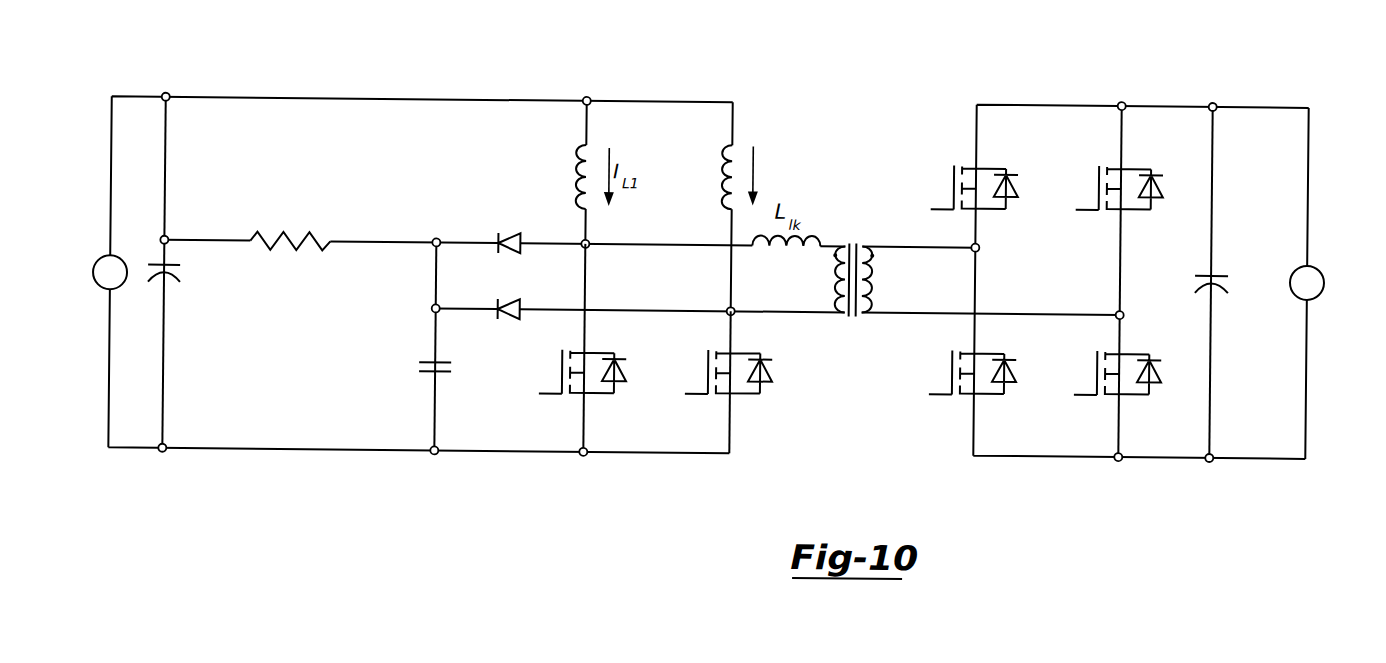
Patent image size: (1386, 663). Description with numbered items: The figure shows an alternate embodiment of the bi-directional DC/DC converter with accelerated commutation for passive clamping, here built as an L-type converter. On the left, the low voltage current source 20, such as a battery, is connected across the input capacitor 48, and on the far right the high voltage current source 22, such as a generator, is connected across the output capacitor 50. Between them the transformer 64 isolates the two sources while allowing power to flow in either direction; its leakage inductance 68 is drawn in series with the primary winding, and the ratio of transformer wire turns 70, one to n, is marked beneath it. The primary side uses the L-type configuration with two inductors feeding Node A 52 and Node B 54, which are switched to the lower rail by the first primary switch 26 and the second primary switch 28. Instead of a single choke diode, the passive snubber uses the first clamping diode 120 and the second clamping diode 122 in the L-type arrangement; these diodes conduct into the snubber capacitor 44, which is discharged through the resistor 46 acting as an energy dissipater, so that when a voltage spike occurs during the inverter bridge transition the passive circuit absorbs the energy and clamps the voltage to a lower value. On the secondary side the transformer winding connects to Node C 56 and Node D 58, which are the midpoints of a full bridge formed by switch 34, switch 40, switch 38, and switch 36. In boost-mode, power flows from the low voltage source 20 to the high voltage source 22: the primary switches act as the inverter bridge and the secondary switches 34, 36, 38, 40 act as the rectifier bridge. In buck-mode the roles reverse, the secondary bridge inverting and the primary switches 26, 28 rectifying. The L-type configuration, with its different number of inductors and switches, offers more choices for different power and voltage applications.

The low voltage current source 20 is at (72, 243).
The high voltage current source 22 is at (1356, 244).
The switch S1 26 is at (538, 377).
The switch S2 28 is at (685, 378).
The switch S5 34 is at (950, 164).
The switch S6 36 is at (1070, 383).
The switch S7 38 is at (925, 388).
The switch S8 40 is at (1088, 174).
The snubber capacitor 44 is at (410, 350).
The resistor 46 is at (283, 306).
The input capacitor 48 is at (180, 338).
The output capacitor 50 is at (1257, 281).
The Node A 52 is at (612, 225).
The Node B 54 is at (705, 292).
The Node C 56 is at (997, 244).
The Node D 58 is at (1147, 324).
The transformer 64 is at (858, 198).
The transformer leakage inductance 68 is at (793, 199).
The ratio of transformer wire turns 70 is at (856, 352).
The clamping diode Dc1 120 is at (481, 207).
The clamping diode Dc2 122 is at (462, 297).